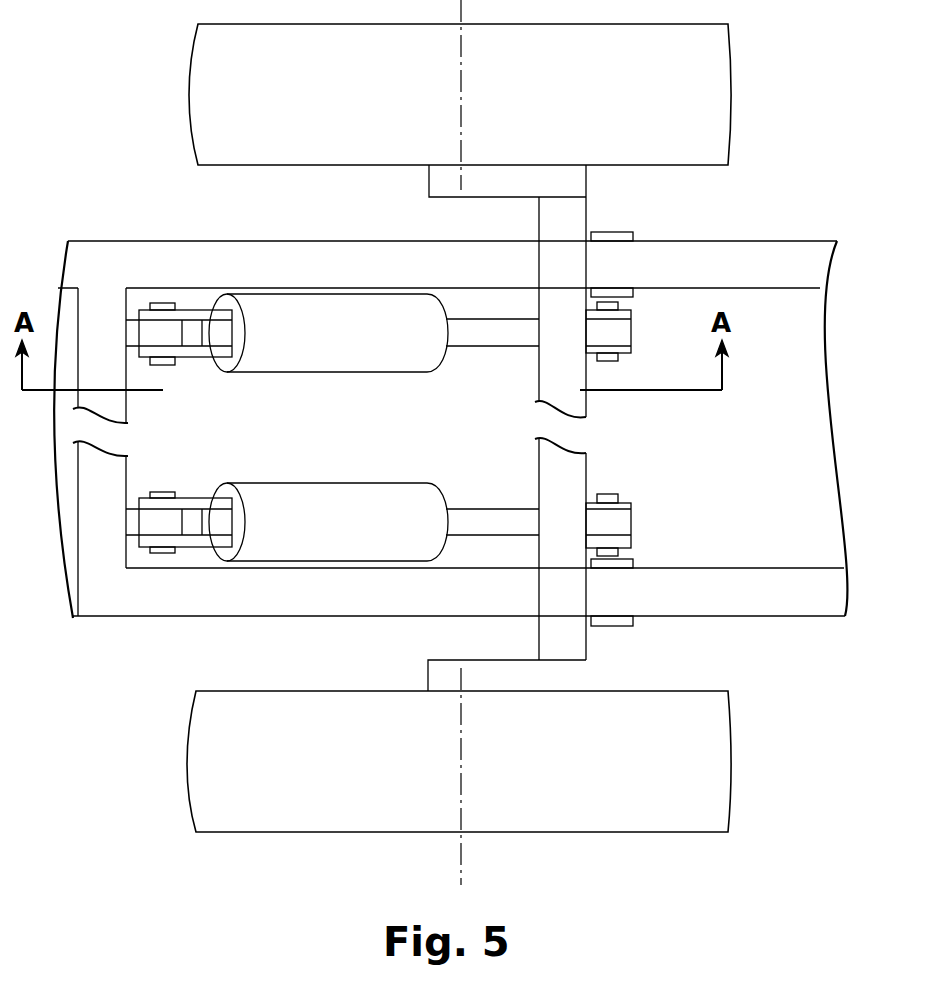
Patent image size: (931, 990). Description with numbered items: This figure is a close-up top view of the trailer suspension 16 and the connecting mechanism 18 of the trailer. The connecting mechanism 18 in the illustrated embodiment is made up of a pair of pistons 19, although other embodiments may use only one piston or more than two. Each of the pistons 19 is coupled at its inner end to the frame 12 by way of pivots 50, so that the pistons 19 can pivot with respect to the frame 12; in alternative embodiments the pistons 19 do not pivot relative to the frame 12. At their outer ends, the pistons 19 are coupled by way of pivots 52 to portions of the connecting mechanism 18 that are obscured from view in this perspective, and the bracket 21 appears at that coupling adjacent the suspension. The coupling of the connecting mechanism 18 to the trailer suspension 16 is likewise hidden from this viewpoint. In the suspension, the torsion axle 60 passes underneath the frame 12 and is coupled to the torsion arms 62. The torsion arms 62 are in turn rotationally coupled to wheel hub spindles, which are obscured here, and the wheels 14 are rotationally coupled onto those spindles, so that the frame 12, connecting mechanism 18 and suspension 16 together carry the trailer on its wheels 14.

The frame 12 is at (156, 241).
The wheels 14 is at (205, 132).
The trailer suspension 16 is at (578, 377).
The connecting mechanism 18 is at (262, 303).
The pistons 19 is at (315, 360).
The clevis bracket 21 is at (631, 330).
The pivots 50 is at (157, 367).
The pivots 52 is at (618, 305).
The torsion axle 60 is at (575, 222).
The torsion arms 62 is at (481, 187).